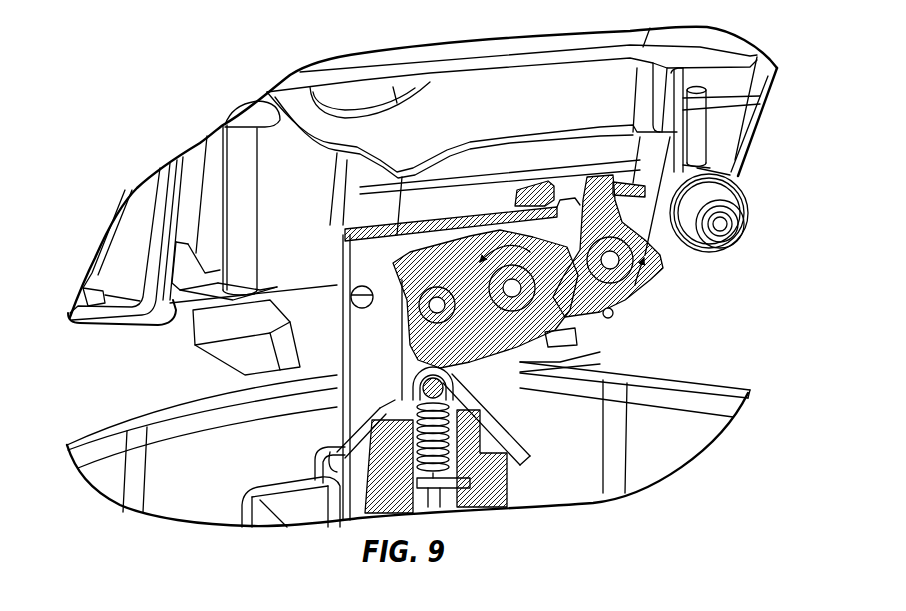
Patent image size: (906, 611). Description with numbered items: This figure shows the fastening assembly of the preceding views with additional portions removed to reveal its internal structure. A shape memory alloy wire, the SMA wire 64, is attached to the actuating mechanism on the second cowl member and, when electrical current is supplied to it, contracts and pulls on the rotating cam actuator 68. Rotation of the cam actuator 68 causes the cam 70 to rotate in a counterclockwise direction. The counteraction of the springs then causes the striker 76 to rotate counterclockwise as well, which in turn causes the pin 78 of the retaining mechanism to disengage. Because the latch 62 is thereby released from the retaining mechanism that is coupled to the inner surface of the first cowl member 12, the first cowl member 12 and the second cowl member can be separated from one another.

The first cowl member 12 is at (716, 390).
The latch 62 is at (596, 334).
The SMA wire 64 is at (700, 133).
The cam actuator 68 is at (628, 183).
The cam 70 is at (637, 240).
The striker 76 is at (522, 357).
The pin 78 is at (472, 362).